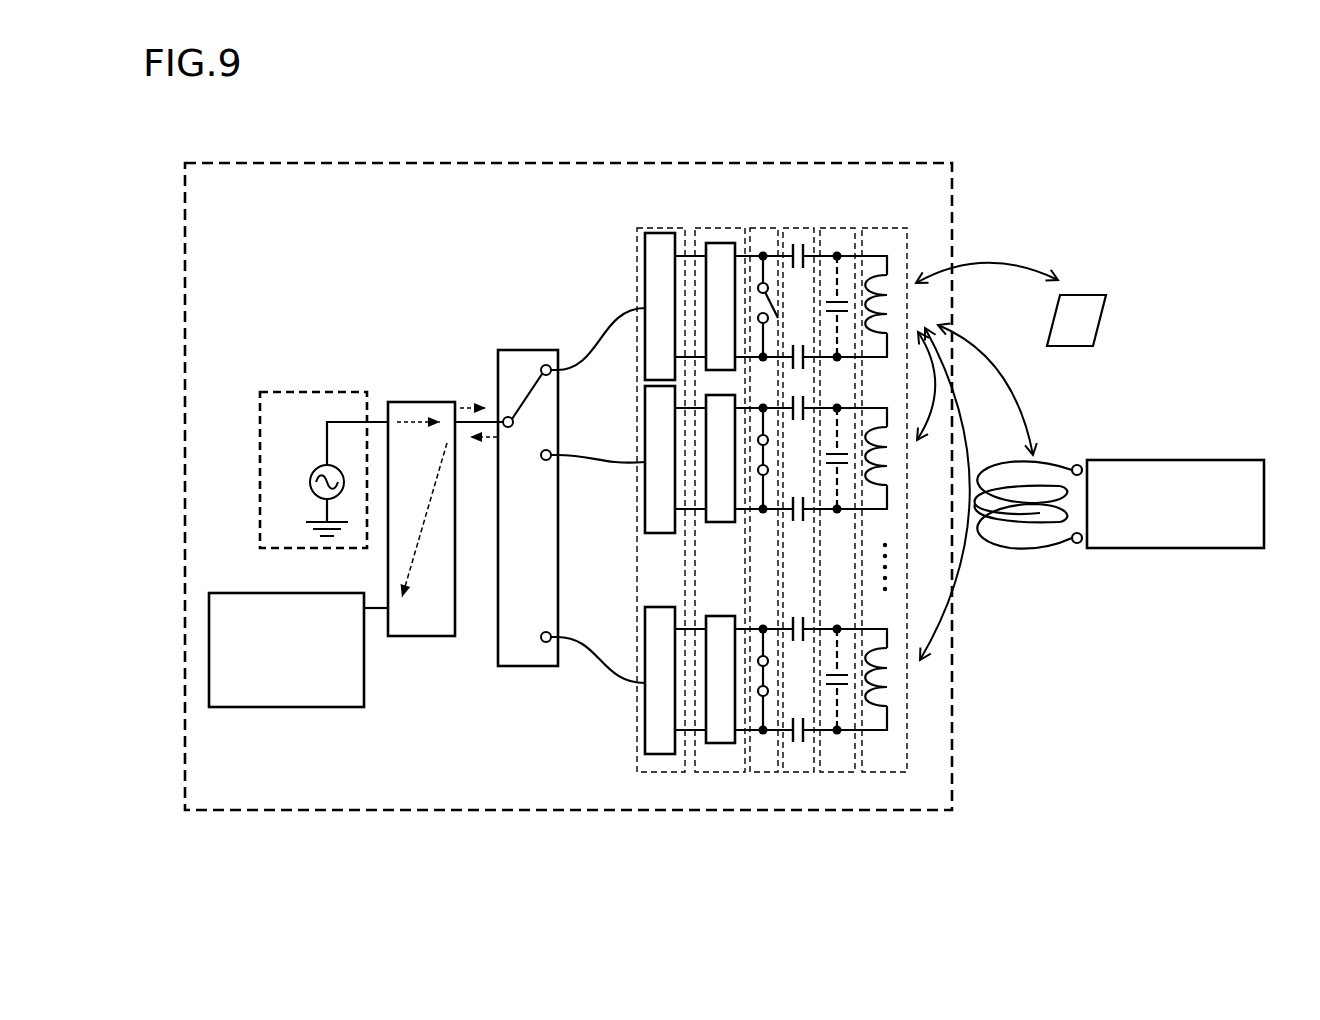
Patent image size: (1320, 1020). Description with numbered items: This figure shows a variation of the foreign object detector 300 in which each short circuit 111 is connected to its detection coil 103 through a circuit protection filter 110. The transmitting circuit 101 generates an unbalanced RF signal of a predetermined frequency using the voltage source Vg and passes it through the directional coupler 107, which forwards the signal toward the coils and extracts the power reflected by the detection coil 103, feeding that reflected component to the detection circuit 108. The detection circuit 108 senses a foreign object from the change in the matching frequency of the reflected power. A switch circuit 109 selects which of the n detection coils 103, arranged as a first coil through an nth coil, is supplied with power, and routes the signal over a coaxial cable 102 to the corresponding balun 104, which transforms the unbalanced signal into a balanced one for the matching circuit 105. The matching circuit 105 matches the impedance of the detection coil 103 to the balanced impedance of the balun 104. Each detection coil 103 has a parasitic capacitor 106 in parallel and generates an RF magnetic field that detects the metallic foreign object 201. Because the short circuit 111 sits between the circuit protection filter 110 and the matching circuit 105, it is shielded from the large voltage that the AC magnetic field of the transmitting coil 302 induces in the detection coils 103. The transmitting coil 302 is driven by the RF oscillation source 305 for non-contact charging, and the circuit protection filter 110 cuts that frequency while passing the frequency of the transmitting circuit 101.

The foreign object detector 300 is at (520, 163).
The transmitting circuit 101 is at (311, 392).
The directional coupler 107 is at (424, 402).
The detection circuit 108 is at (290, 708).
The switch circuit 109 is at (528, 350).
The coaxial cable 102 is at (603, 319).
The balun 104 is at (648, 228).
The matching circuit 105 is at (701, 228).
The short circuit 111 is at (752, 228).
The circuit protection filter 110 is at (804, 228).
The parasitic capacitor 106 is at (854, 228).
The detection coil 103 is at (907, 228).
The metallic foreign object 201 is at (1085, 294).
The transmitting coil 302 is at (1052, 460).
The RF oscillation source 305 is at (1163, 460).